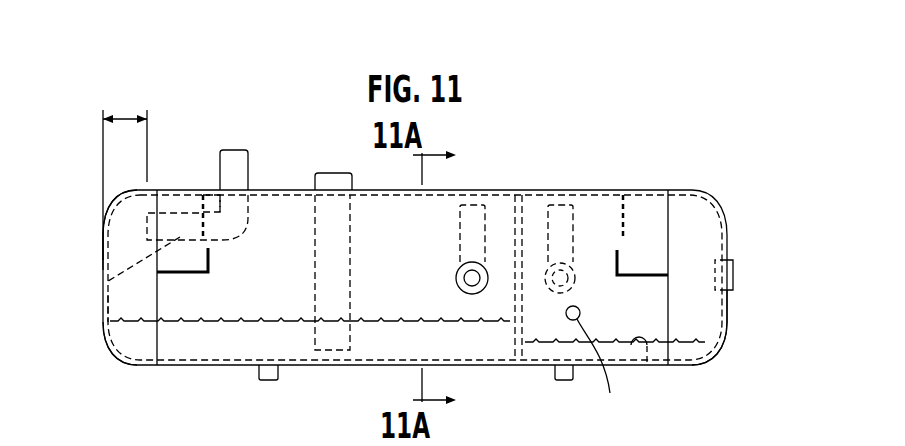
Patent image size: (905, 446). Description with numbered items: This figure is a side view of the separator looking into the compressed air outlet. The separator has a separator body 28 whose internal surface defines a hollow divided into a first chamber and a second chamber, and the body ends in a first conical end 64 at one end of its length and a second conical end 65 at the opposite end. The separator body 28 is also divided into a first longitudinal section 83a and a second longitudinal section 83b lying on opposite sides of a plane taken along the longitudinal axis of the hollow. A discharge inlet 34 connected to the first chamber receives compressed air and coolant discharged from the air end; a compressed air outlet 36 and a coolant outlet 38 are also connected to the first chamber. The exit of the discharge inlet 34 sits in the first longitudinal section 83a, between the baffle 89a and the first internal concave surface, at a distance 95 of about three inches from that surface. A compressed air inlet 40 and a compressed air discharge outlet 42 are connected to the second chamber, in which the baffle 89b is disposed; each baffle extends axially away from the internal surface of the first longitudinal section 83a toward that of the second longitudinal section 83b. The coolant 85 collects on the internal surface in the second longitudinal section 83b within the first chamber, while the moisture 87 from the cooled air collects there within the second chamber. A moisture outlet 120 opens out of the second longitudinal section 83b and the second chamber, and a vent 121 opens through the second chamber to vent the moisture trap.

The separator body 28 is at (475, 190).
The discharge inlet 34 is at (234, 150).
The compressed air outlet 36 is at (499, 222).
The coolant outlet 38 is at (268, 381).
The compressed air inlet 40 is at (588, 222).
The compressed air discharge outlet 42 is at (735, 276).
The first conical end 64 is at (101, 307).
The second conical end 65 is at (728, 305).
The first longitudinal section 83a is at (103, 238).
The second longitudinal section 83b is at (103, 343).
The coolant 85 is at (378, 322).
The moisture 87 is at (647, 364).
The baffle 89a is at (206, 192).
The baffle 89b is at (638, 205).
The distance 95 is at (132, 113).
The moisture outlet 120 is at (565, 381).
The vent 121 is at (606, 366).